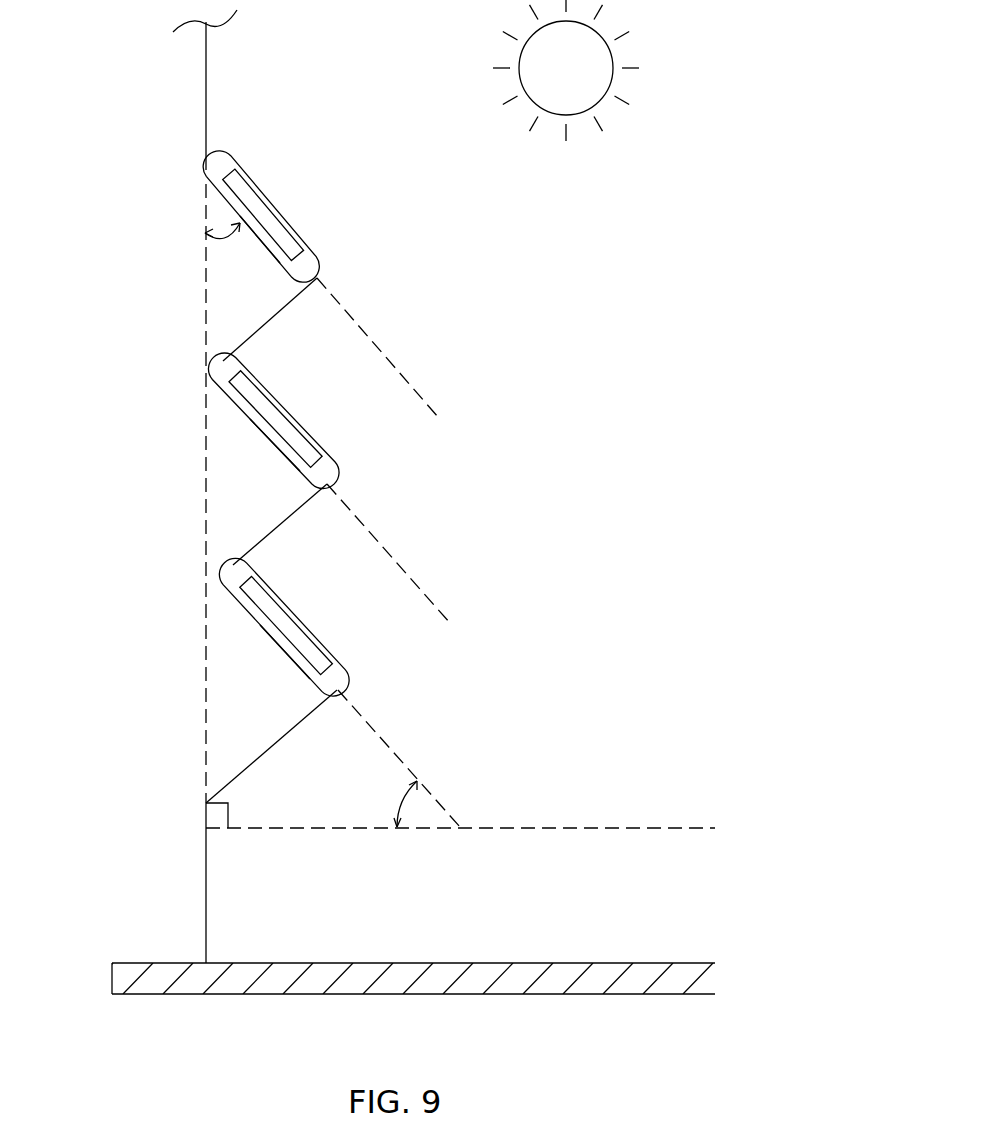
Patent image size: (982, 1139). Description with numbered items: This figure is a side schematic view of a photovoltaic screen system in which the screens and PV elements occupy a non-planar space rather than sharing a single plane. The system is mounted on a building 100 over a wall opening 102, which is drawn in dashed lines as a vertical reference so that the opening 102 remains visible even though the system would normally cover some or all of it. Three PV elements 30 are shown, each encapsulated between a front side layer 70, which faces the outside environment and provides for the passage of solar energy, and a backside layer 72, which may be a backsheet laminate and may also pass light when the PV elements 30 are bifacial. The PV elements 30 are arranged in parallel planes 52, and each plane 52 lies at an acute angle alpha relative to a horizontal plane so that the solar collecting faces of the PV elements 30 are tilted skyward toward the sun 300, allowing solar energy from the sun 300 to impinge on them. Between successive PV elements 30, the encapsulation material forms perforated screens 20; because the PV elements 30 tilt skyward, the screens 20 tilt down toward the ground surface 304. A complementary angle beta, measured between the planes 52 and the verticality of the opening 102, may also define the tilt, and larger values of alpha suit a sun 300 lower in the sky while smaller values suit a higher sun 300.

The building 100 is at (206, 92).
The wall opening 102 is at (206, 466).
The front side layer 70 is at (250, 176).
The PV element 30 is at (290, 247).
The backside layer 72 is at (272, 253).
The screen 20 is at (262, 328).
The parallel plane 52 is at (385, 356).
The sun 300 is at (613, 78).
The ground surface 304 is at (333, 963).